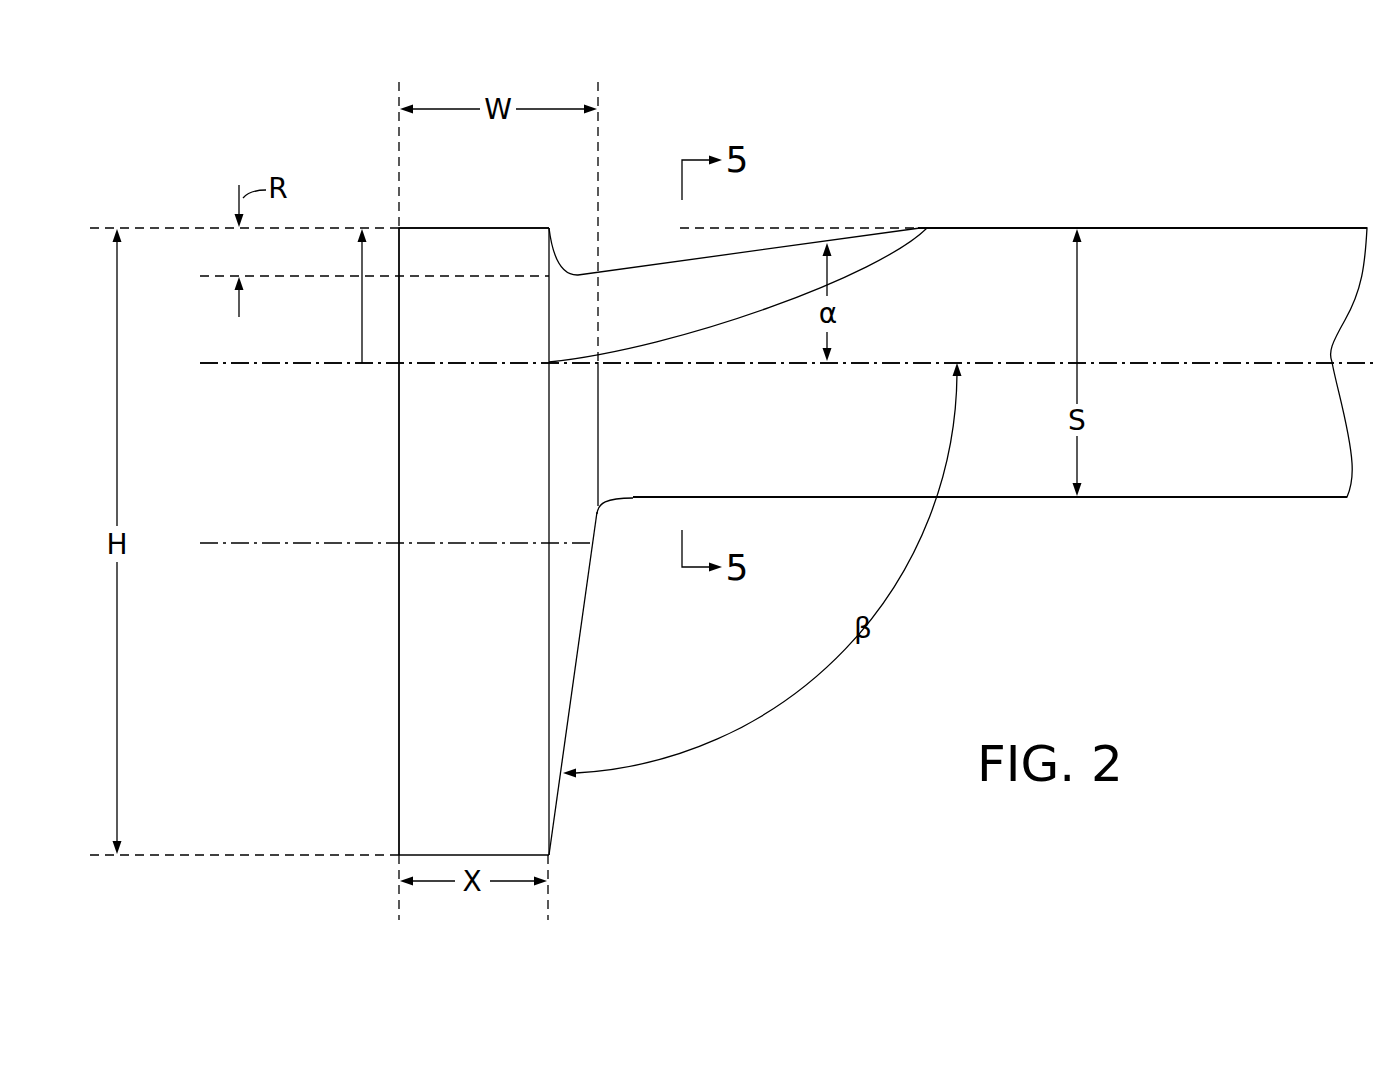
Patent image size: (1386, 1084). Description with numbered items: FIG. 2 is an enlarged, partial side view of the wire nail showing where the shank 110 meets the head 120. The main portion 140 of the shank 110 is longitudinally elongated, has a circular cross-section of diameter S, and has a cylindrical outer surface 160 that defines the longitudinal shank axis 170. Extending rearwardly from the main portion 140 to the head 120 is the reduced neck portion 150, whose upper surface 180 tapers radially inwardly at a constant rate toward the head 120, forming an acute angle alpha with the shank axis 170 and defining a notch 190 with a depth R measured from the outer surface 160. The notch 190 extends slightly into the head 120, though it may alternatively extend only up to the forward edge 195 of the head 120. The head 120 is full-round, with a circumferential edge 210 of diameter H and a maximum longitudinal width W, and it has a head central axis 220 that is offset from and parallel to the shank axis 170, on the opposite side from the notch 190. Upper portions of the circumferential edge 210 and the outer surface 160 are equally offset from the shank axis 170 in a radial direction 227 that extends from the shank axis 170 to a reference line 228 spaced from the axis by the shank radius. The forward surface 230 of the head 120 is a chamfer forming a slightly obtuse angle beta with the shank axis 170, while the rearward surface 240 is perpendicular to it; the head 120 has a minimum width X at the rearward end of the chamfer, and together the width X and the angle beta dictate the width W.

The shank 110 is at (1139, 560).
The head 120 is at (360, 698).
The main portion 140 is at (1258, 455).
The reduced neck portion 150 is at (803, 433).
The outer surface 160 is at (1193, 215).
The shank axis 170 is at (300, 366).
The upper surface 180 is at (705, 243).
The notch 190 is at (628, 253).
The forward edge 195 is at (600, 432).
The circumferential edge 210 is at (476, 212).
The head central axis 220 is at (274, 544).
The radial direction 227 is at (361, 312).
The reference line 228 is at (160, 225).
The forward surface 230 is at (580, 634).
The rearward surface 240 is at (398, 617).